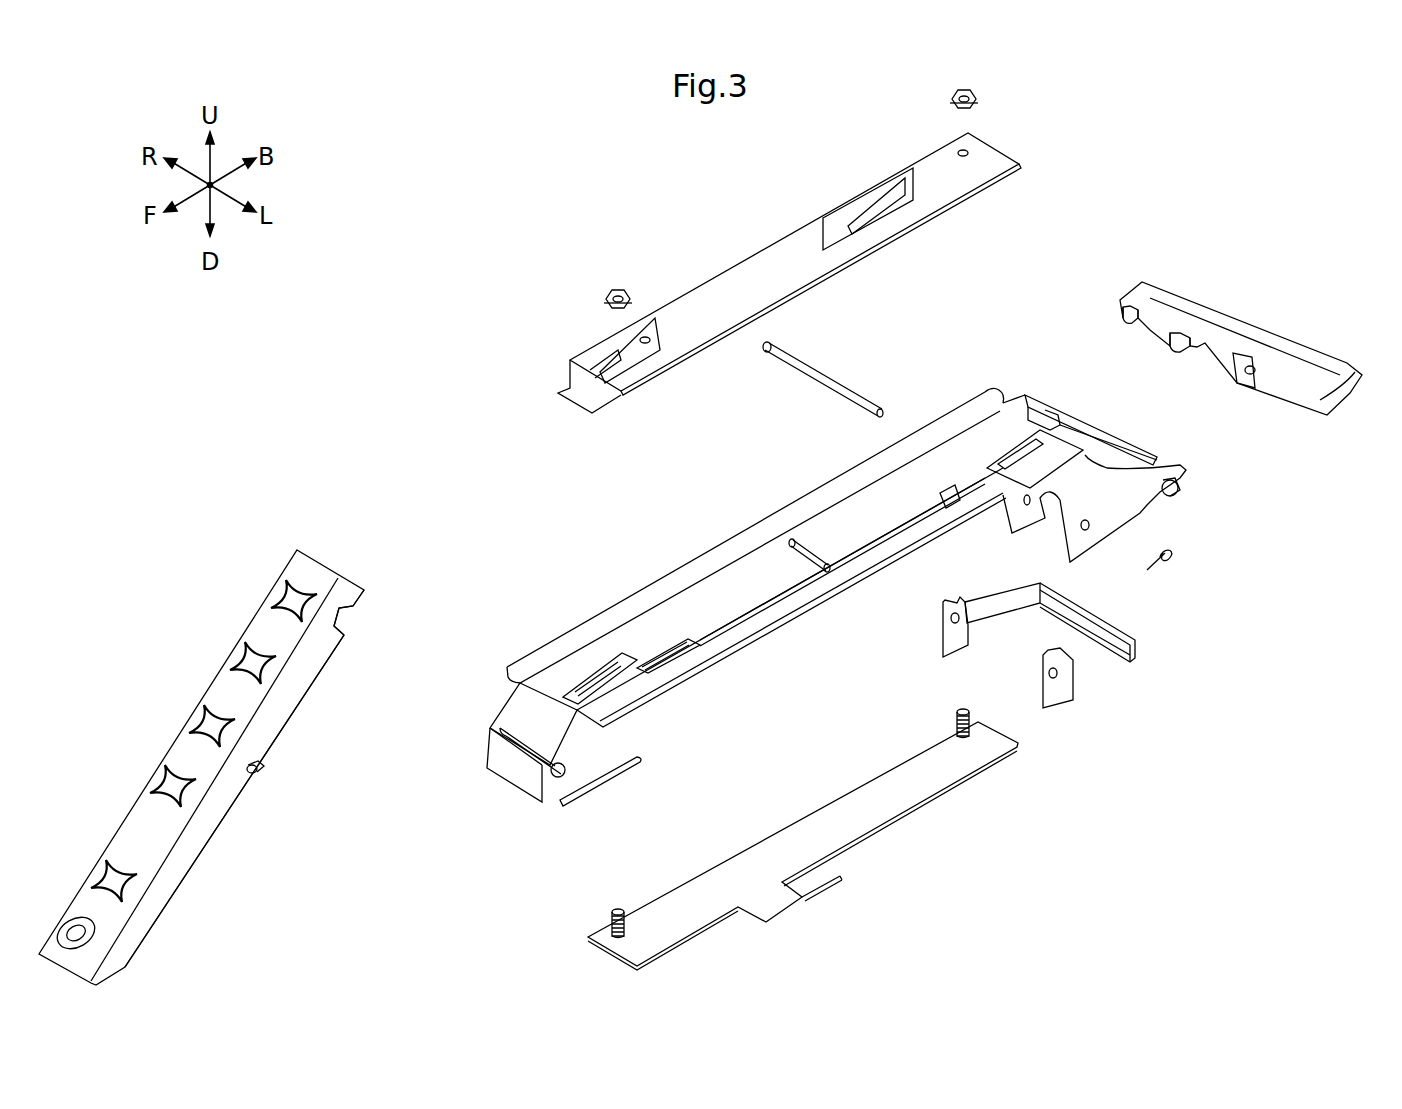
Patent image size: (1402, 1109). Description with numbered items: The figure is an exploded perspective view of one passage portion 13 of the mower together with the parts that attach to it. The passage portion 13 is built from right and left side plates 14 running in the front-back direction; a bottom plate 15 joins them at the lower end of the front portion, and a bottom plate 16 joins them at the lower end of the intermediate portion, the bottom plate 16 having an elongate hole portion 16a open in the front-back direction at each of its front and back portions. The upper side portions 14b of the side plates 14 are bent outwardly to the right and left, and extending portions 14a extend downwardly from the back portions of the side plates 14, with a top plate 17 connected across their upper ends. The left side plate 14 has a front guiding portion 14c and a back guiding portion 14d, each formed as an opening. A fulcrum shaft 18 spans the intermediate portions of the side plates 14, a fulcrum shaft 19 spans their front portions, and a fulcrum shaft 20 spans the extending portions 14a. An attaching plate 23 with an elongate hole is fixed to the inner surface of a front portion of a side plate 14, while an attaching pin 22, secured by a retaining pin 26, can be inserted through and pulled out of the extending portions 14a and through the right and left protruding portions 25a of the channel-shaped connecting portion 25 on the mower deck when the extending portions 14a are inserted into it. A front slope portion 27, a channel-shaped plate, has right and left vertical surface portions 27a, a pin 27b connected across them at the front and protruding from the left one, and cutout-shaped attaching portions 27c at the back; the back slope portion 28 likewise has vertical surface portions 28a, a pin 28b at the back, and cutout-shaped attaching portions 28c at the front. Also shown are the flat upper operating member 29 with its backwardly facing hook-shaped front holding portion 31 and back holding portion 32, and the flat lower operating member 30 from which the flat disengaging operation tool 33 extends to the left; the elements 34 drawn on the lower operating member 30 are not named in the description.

The passage portion 13 is at (872, 569).
The side plates 14 is at (872, 569).
The extending portions 14a is at (1062, 402).
The upper side portions 14b is at (822, 546).
The front guiding portion 14c is at (730, 598).
The back guiding portion 14d is at (977, 452).
The bottom plate 15 is at (603, 752).
The bottom plate 16 is at (846, 515).
The elongate hole portion 16a is at (660, 622).
The top plate 17 is at (1105, 412).
The fulcrum shaft 18 is at (802, 515).
The fulcrum shaft 19 is at (530, 737).
The fulcrum shaft 20 is at (1162, 462).
The attaching pin 22 is at (822, 334).
The attaching plate 23 is at (594, 630).
The connecting portion 25 is at (1067, 647).
The protruding portions 25a is at (965, 580).
The retaining pin 26 is at (1160, 545).
The front slope portion 27 is at (225, 767).
The vertical surface portions 27a is at (180, 835).
The pin 27b is at (258, 746).
The attaching portion 27c is at (338, 584).
The back slope portion 28 is at (1221, 330).
The vertical surface portions 28a is at (1335, 380).
The pin 28b is at (1247, 372).
The attaching portion 28c is at (1130, 292).
The upper operating member 29 is at (789, 259).
The lower operating member 30 is at (772, 814).
The front holding portion 31 is at (580, 320).
The back holding portion 32 is at (838, 200).
The disengaging operation tool 33 is at (832, 880).
The stud 34 is at (612, 892).